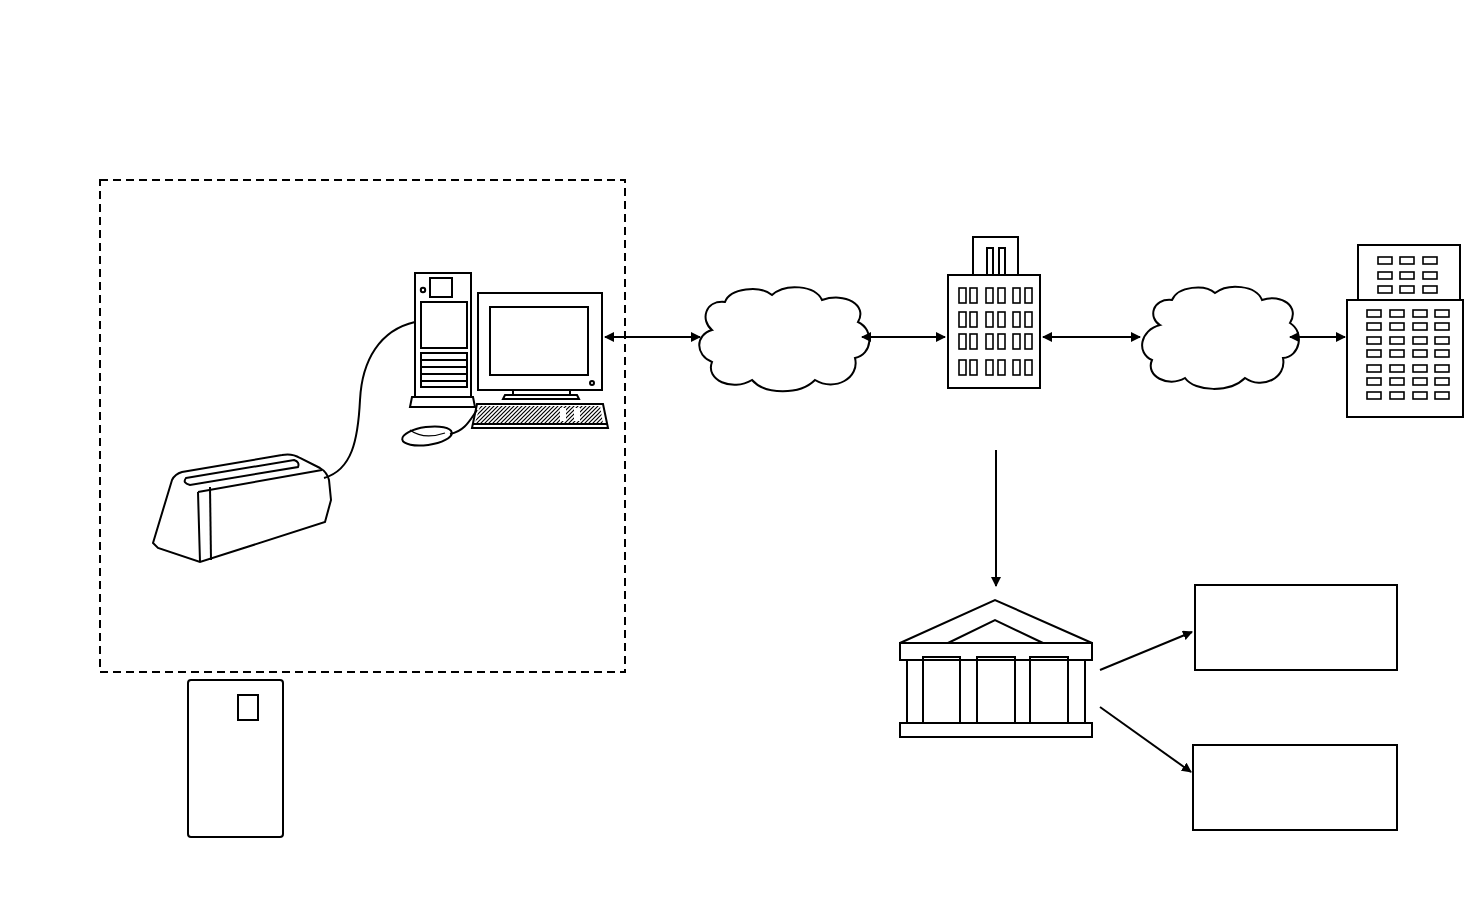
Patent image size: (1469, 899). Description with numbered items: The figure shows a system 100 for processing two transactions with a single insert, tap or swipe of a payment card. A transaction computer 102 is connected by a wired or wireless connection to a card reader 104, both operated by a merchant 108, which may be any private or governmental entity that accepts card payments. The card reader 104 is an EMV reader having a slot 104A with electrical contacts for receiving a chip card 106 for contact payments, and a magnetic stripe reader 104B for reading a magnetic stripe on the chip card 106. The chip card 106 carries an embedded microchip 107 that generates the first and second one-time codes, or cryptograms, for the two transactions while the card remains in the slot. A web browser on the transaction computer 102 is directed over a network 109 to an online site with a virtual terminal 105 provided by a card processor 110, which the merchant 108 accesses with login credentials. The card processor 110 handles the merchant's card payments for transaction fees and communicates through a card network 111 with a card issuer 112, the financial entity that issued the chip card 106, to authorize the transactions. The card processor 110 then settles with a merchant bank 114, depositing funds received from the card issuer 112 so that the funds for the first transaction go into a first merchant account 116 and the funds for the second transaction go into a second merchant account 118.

The system 100 is at (390, 120).
The transaction computer 102 is at (503, 292).
The card reader 104 is at (253, 508).
The slot 104A is at (237, 463).
The magnetic stripe reader 104B is at (193, 528).
The virtual terminal 105 is at (557, 307).
The chip card 106 is at (291, 784).
The embedded microchip 107 is at (258, 708).
The merchant 108 is at (362, 426).
The network 109 is at (784, 339).
The card processor 110 is at (993, 237).
The card network 111 is at (1220, 338).
The card issuer 112 is at (1405, 244).
The merchant bank 114 is at (905, 695).
The first merchant account 116 is at (1296, 627).
The second merchant account 118 is at (1295, 787).